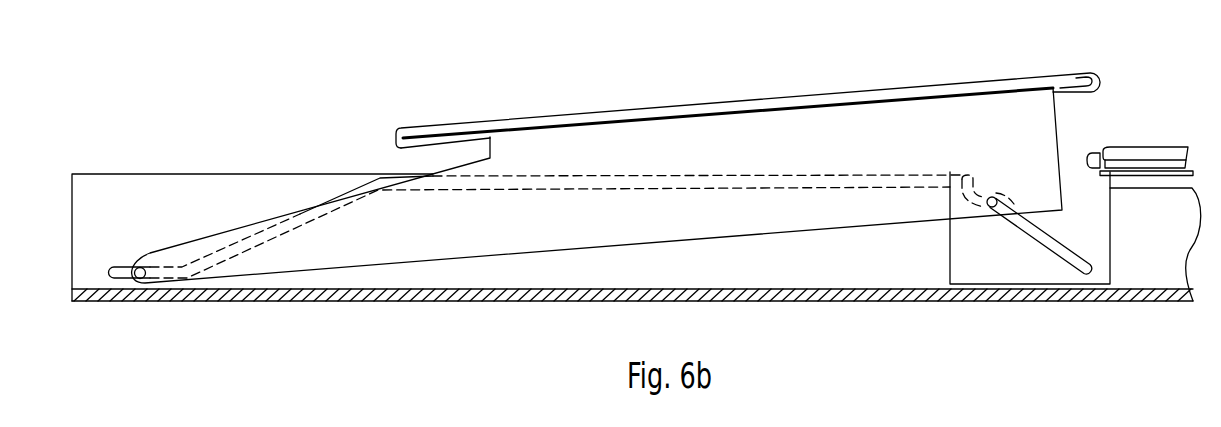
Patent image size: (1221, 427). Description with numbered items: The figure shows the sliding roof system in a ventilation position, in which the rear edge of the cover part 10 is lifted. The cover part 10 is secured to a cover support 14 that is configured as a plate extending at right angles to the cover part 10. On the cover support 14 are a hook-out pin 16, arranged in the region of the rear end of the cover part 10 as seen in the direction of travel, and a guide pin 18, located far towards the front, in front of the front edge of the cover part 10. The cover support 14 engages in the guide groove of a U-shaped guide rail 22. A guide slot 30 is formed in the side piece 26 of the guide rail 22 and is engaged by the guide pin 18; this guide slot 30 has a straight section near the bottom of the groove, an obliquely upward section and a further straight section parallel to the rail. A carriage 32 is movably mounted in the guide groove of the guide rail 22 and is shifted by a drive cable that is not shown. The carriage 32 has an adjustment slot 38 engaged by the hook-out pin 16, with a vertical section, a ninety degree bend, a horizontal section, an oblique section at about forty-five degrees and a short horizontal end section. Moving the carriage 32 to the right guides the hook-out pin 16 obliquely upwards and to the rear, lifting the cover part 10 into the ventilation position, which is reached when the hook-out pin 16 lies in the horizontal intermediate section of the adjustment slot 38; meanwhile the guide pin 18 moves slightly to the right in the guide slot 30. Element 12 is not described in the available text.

The cover part 10 is at (948, 90).
The cassette 12 is at (1162, 152).
The cover support 14 is at (843, 130).
The hook-out pin 16 is at (989, 208).
The guide pin 18 is at (143, 280).
The guide rail 22 is at (428, 295).
The side piece 26 is at (892, 263).
The guide slot 30 is at (298, 218).
The carriage 32 is at (1028, 265).
The adjustment slot 38 is at (1087, 272).